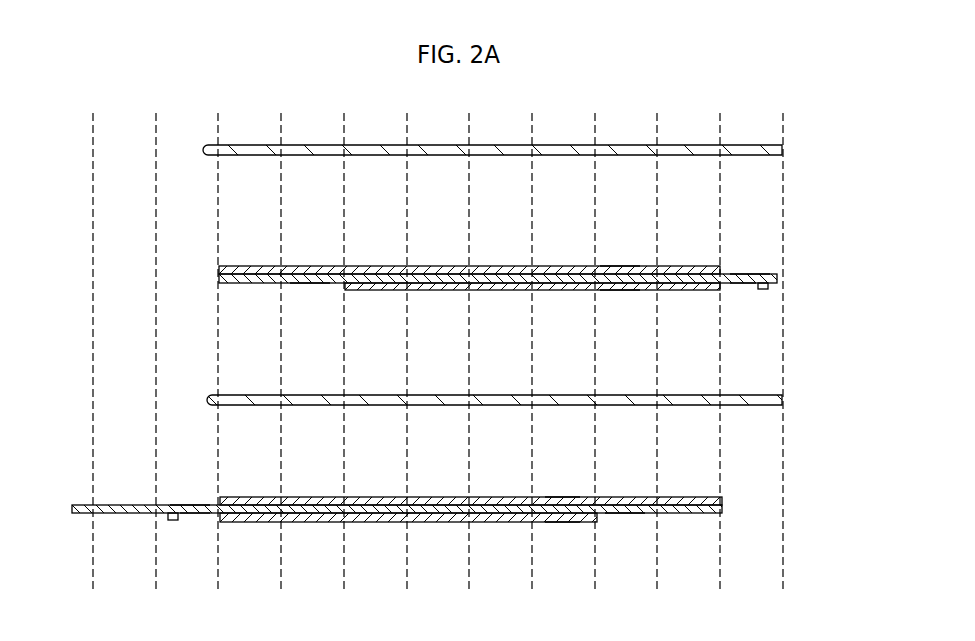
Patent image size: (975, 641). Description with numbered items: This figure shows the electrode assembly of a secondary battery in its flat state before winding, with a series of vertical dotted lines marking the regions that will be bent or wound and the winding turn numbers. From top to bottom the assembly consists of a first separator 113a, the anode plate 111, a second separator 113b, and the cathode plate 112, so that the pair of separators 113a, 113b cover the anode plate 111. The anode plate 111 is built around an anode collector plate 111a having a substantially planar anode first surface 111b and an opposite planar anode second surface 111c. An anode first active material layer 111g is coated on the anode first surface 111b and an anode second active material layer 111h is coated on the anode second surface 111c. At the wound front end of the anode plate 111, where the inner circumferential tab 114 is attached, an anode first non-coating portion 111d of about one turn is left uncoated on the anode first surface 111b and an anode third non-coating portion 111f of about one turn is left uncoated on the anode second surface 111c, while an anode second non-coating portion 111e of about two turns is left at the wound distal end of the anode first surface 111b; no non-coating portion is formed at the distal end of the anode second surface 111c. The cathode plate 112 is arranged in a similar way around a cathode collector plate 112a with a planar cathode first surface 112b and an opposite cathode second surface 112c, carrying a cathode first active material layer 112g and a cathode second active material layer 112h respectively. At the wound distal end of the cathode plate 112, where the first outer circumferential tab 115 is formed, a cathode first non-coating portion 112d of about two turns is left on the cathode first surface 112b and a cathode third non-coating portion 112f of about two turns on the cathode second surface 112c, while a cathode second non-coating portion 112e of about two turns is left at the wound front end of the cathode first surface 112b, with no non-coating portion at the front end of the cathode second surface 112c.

The anode plate 111 is at (540, 282).
The anode collector plate 111a is at (500, 266).
The anode first surface 111b is at (437, 290).
The anode second surface 111c is at (435, 276).
The anode first non-coating portion 111d is at (748, 292).
The anode second non-coating portion 111e is at (310, 292).
The anode third non-coating portion 111f is at (748, 265).
The anode first active material layer 111g is at (620, 290).
The anode second active material layer 111h is at (620, 266).
The cathode plate 112 is at (427, 512).
The cathode collector plate 112a is at (437, 497).
The cathode first surface 112b is at (378, 522).
The cathode second surface 112c is at (378, 507).
The cathode first non-coating portion 112d is at (187, 522).
The cathode second non-coating portion 112e is at (625, 522).
The cathode third non-coating portion 112f is at (187, 496).
The cathode first active material layer 112g is at (560, 522).
The cathode second active material layer 112h is at (560, 497).
The separator 113a is at (785, 150).
The separator 113b is at (784, 400).
The inner circumferential tab 114 is at (768, 290).
The first outer circumferential tab 115 is at (171, 522).